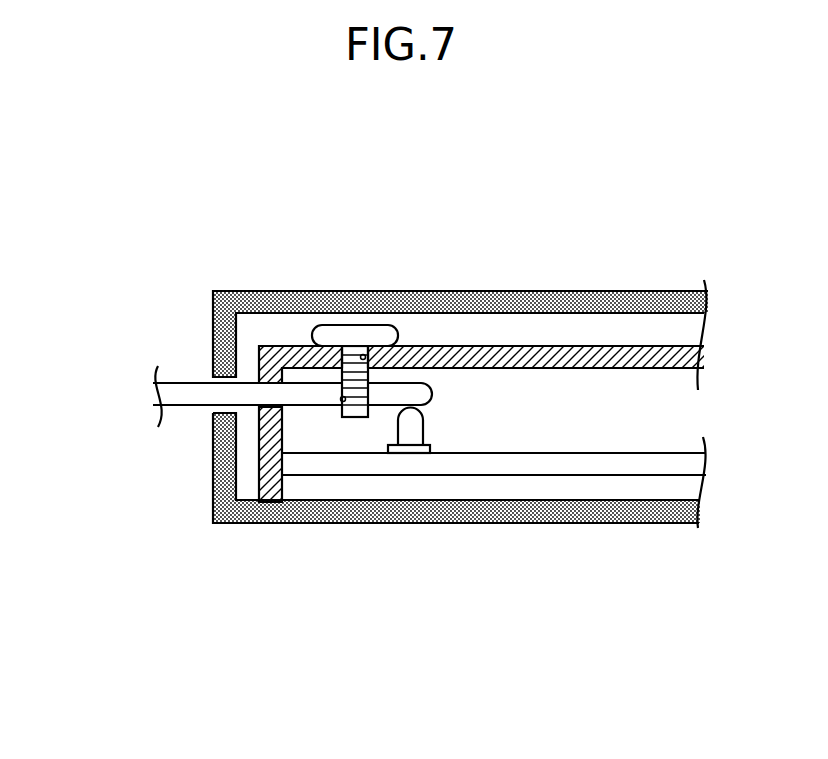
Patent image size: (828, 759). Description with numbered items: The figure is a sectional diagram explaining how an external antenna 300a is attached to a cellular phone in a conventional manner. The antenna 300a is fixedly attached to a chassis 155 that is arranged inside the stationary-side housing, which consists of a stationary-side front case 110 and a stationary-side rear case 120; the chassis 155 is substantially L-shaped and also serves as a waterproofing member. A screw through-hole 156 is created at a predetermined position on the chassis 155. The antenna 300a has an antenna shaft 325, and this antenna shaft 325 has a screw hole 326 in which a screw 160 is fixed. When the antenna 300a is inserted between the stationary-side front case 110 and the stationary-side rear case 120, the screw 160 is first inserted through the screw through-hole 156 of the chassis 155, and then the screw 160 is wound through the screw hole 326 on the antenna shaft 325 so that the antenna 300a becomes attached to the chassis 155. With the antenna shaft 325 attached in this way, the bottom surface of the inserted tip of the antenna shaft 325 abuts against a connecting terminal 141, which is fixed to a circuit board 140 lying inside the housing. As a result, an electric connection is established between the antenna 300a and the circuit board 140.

The stationary-side front case 110 is at (323, 513).
The stationary-side rear case 120 is at (398, 304).
The circuit board 140 is at (483, 463).
The connecting terminal 141 is at (410, 425).
The chassis 155 is at (635, 352).
The screw through-hole 156 is at (365, 356).
The screw 160 is at (336, 337).
The external antenna 300a is at (189, 382).
The antenna shaft 325 is at (193, 388).
The screw hole 326 is at (340, 397).